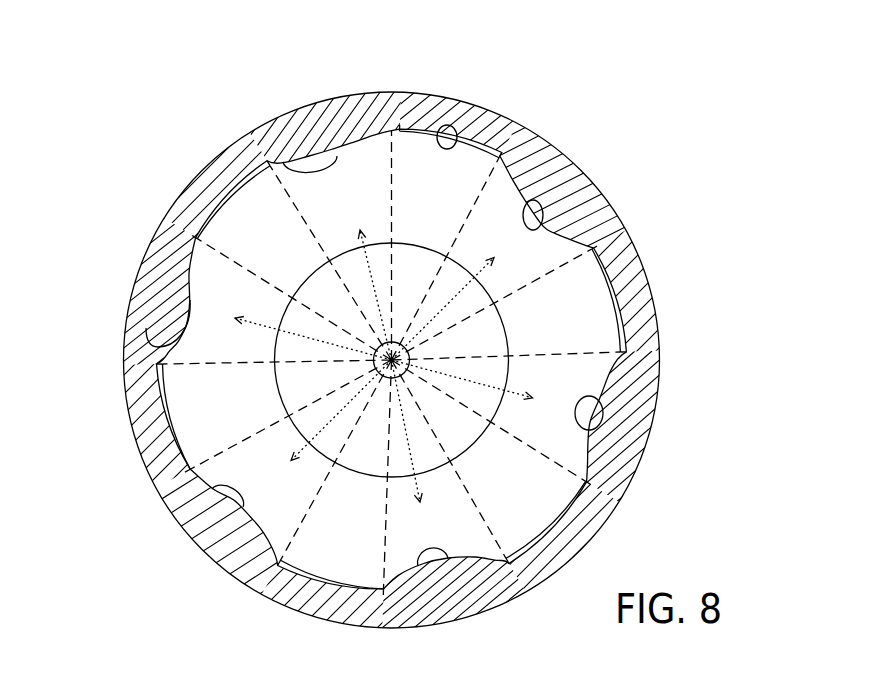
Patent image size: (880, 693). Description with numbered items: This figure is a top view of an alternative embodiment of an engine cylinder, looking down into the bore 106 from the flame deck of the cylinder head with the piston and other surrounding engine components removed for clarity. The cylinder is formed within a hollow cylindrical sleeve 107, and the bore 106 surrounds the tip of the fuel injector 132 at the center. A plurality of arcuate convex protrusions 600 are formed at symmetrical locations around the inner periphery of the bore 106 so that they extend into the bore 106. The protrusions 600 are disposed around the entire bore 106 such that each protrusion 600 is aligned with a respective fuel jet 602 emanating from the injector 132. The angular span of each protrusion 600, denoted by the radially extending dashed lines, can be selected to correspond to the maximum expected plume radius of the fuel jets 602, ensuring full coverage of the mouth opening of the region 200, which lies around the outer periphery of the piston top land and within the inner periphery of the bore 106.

The bore 106 is at (440, 130).
The hollow cylindrical sleeve 107 is at (540, 148).
The fuel injector 132 is at (410, 357).
The region 200 is at (429, 360).
The arcuate convex protrusions 600 is at (284, 160).
The fuel jet 602 is at (263, 326).